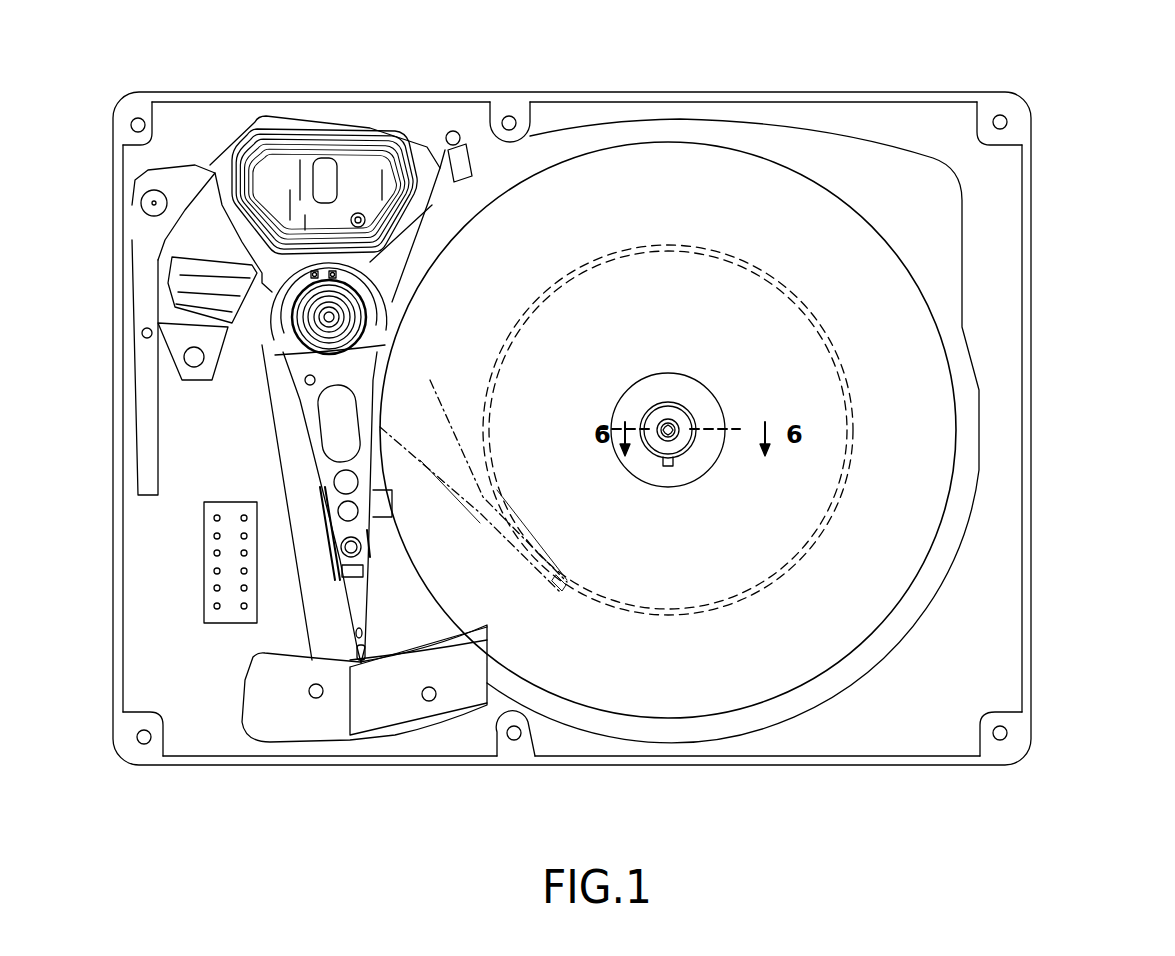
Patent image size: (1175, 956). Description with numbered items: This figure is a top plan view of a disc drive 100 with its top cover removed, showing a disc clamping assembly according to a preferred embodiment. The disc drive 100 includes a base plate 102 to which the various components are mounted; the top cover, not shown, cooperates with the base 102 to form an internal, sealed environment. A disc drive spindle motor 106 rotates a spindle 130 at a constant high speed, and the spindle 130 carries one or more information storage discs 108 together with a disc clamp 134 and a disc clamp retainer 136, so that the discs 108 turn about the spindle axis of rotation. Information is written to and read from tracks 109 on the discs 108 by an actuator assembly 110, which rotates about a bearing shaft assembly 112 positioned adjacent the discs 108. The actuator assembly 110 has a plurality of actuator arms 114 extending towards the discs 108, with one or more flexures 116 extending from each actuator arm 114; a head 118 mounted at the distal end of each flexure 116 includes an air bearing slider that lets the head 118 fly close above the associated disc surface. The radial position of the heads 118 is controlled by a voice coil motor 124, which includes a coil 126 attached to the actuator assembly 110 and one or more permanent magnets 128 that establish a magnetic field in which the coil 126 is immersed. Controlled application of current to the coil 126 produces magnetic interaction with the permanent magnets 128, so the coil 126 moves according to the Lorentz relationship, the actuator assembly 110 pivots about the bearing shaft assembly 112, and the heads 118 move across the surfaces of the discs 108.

The disc drive 100 is at (862, 776).
The base plate 102 is at (1024, 414).
The disc drive spindle motor 106 is at (693, 386).
The information storage disc 108 is at (675, 158).
The tracks 109 is at (662, 609).
The actuator assembly 110 is at (396, 308).
The bearing shaft assembly 112 is at (330, 317).
The actuator arm 114 is at (458, 445).
The flexure 116 is at (380, 595).
The head 118 is at (366, 664).
The voice coil motor 124 is at (294, 120).
The coil 126 is at (354, 133).
The permanent magnet 128 is at (178, 282).
The spindle 130 is at (688, 428).
The disc clamp 134 is at (638, 398).
The disc clamp retainer 136 is at (680, 418).